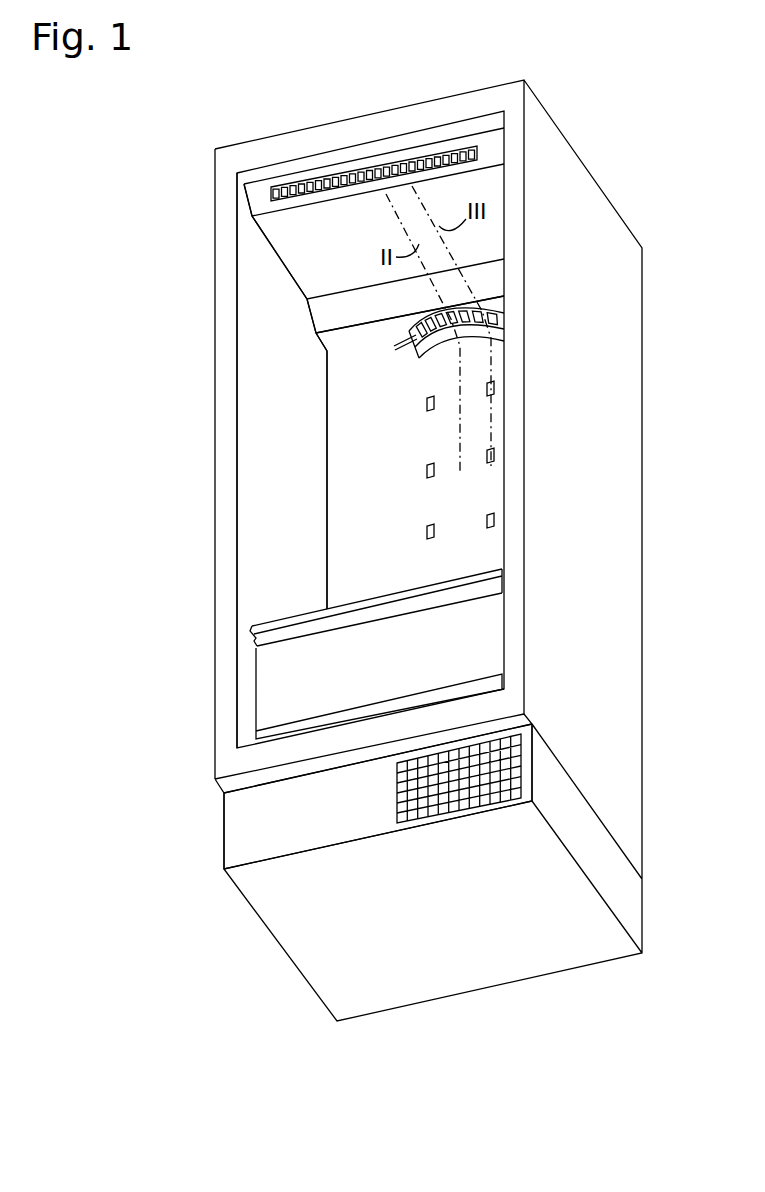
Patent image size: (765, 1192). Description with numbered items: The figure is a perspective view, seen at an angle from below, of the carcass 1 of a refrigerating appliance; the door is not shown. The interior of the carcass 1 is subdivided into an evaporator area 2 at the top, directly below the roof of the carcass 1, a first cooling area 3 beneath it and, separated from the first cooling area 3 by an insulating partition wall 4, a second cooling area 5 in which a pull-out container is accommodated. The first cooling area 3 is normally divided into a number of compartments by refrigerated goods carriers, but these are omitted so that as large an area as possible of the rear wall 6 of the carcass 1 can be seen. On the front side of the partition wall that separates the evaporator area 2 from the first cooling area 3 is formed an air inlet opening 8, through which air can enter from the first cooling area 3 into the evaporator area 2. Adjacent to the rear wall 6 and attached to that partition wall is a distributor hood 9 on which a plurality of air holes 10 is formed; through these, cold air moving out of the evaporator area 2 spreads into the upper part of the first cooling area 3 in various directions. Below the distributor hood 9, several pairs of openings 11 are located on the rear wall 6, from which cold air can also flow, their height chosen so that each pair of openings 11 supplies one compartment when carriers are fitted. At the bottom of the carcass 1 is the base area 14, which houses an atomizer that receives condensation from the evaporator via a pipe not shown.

The carcass 1 is at (622, 422).
The evaporator area 2 is at (305, 240).
The first cooling area 3 is at (283, 405).
The insulating partition wall 4 is at (305, 612).
The second cooling area 5 is at (305, 685).
The rear wall 6 is at (393, 479).
The air inlet opening 8 is at (300, 183).
The distributor hood 9 is at (443, 348).
The air holes 10 is at (396, 347).
The pairs of openings 11 is at (490, 450).
The base area 14 is at (285, 837).